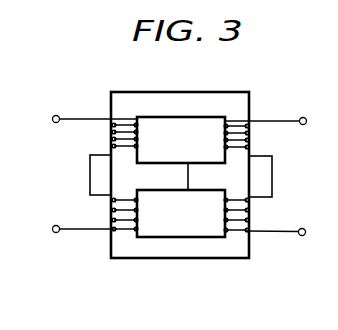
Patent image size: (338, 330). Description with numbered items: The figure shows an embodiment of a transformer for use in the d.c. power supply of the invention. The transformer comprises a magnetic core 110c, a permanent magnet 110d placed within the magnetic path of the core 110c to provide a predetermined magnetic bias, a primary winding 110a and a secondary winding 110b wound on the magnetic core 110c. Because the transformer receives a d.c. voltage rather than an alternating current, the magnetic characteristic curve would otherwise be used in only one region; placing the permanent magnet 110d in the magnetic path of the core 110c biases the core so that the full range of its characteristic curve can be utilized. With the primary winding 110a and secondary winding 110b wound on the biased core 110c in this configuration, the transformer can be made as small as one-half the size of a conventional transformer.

The primary winding 110a is at (108, 135).
The secondary winding 110b is at (253, 136).
The magnetic core 110c is at (190, 102).
The permanent magnet 110d is at (203, 190).